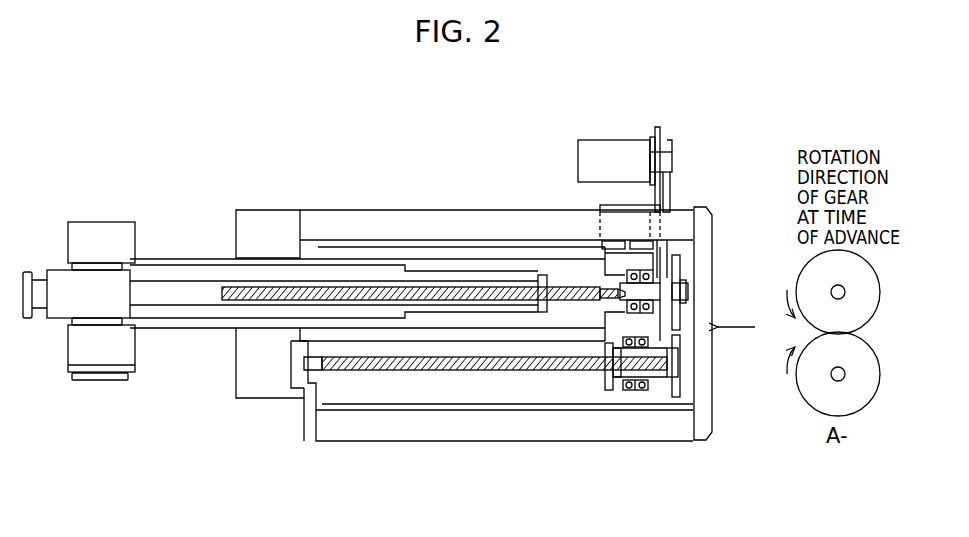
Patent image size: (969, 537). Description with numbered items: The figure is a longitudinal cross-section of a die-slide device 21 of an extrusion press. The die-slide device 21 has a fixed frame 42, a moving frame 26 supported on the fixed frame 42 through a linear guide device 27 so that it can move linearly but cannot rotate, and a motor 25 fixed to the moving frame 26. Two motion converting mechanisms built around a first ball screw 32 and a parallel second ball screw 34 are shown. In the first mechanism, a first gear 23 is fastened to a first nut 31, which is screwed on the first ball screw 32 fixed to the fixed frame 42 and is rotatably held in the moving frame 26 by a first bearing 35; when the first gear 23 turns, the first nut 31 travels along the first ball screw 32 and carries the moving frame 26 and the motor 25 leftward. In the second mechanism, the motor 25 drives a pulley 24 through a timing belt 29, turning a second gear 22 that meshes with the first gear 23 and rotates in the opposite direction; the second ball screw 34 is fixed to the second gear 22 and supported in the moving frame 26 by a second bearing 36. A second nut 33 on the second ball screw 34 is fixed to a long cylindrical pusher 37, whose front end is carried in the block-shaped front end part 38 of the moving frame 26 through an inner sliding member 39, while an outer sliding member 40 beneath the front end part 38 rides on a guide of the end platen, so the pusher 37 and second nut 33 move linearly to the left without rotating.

The die-slide device 21 is at (712, 207).
The second gear 22 is at (680, 285).
The first gear 23 is at (680, 385).
The pulley 24 is at (684, 300).
The motor 25 is at (625, 162).
The moving frame 26 is at (565, 283).
The linear guide device 27 is at (612, 262).
The timing belt 29 is at (675, 193).
The first nut 31 is at (670, 377).
The first ball screw 32 is at (520, 370).
The second nut 33 is at (508, 210).
The second ball screw 34 is at (380, 287).
The first bearing 35 is at (637, 390).
The second bearing 36 is at (648, 240).
The pusher 37 is at (27, 307).
The front end part 38 is at (100, 243).
The inner sliding member 39 is at (89, 267).
The outer sliding member 40 is at (100, 377).
The fixed frame 42 is at (330, 230).